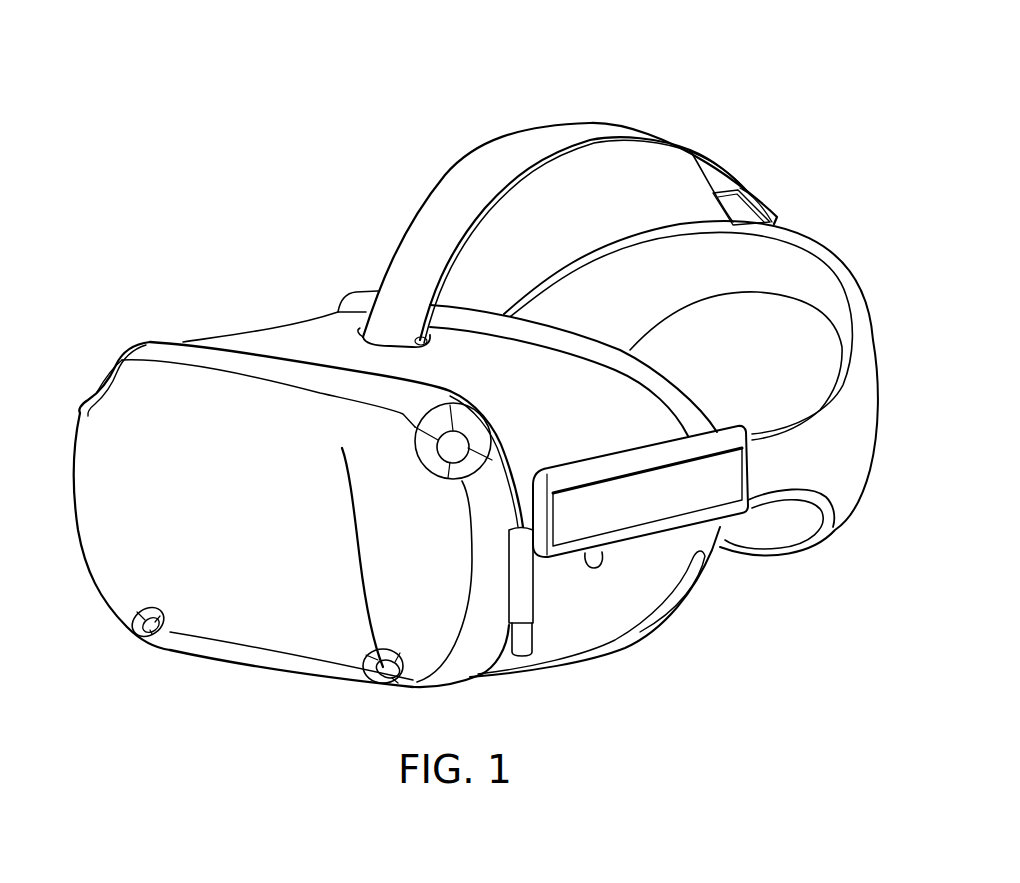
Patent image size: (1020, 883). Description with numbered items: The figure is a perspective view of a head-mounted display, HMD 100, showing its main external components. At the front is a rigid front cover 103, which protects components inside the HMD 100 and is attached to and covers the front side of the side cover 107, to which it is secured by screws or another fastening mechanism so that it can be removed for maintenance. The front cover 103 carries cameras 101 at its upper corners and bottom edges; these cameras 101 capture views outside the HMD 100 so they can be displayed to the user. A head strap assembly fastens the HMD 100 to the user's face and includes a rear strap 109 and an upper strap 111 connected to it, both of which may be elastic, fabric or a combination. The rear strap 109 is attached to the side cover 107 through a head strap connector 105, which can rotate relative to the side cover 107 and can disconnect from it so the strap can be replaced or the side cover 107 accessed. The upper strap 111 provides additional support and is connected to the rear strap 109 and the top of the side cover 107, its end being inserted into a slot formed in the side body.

The head-mounted display 100 is at (103, 152).
The cameras 101 is at (443, 452).
The front cover 103 is at (250, 632).
The head strap connector 105 is at (670, 507).
The side cover 107 is at (603, 607).
The rear strap 109 is at (845, 485).
The upper strap 111 is at (572, 130).